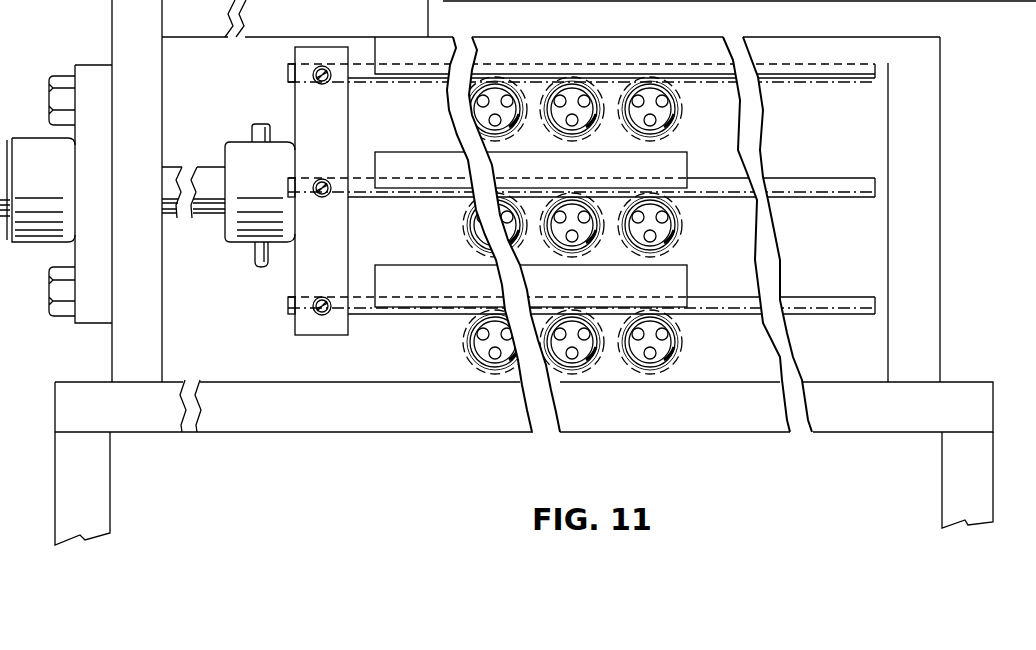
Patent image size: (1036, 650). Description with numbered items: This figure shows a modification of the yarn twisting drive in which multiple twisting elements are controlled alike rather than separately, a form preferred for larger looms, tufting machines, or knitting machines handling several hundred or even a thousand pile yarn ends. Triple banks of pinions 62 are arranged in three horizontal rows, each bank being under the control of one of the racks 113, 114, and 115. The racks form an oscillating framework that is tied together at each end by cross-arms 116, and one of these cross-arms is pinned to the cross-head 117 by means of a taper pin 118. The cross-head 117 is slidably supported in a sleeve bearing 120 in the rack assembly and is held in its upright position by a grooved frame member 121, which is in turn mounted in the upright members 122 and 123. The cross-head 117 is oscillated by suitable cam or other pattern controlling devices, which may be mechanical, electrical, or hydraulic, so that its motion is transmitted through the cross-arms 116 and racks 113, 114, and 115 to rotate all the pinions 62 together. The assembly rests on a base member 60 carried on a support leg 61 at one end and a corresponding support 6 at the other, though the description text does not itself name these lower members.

The support leg 6 is at (987, 478).
The base member 60 is at (352, 418).
The support leg 61 is at (105, 512).
The pinion 62 is at (668, 108).
The rack 113 is at (369, 80).
The rack 114 is at (368, 197).
The rack 115 is at (368, 314).
The cross-arm 116 is at (305, 285).
The cross-head 117 is at (170, 168).
The taper pin 118 is at (267, 123).
The sleeve bearing 120 is at (25, 145).
The grooved frame member 121 is at (873, 66).
The upright member 122 is at (927, 190).
The upright member 123 is at (118, 352).